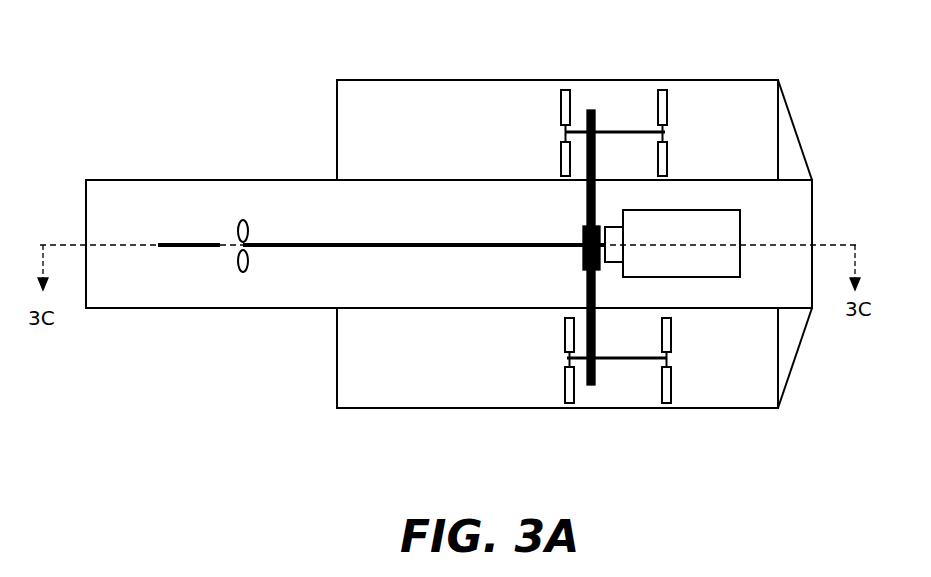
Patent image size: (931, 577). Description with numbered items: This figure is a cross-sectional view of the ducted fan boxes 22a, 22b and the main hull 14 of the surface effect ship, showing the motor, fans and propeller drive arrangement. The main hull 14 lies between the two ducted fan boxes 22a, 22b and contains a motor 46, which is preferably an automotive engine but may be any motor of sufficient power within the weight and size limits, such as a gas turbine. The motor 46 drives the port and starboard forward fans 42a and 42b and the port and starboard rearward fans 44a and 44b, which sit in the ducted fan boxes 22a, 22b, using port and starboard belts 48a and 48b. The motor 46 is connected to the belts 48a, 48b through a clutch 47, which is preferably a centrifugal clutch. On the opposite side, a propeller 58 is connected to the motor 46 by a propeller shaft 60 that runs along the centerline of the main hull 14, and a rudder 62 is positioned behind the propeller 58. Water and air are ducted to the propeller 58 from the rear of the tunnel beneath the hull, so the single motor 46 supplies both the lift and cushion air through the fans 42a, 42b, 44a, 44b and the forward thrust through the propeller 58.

The main hull 14 is at (193, 195).
The ducted fan box 22a is at (400, 97).
The ducted fan box 22b is at (378, 397).
The forward fan 42a is at (665, 112).
The forward fan 42b is at (663, 400).
The rearward fan 44a is at (567, 112).
The rearward fan 44b is at (568, 400).
The motor 46 is at (725, 232).
The clutch 47 is at (617, 243).
The belt 48a is at (590, 202).
The belt 48b is at (587, 296).
The propeller 58 is at (243, 222).
The propeller shaft 60 is at (417, 243).
The rudder 62 is at (212, 248).